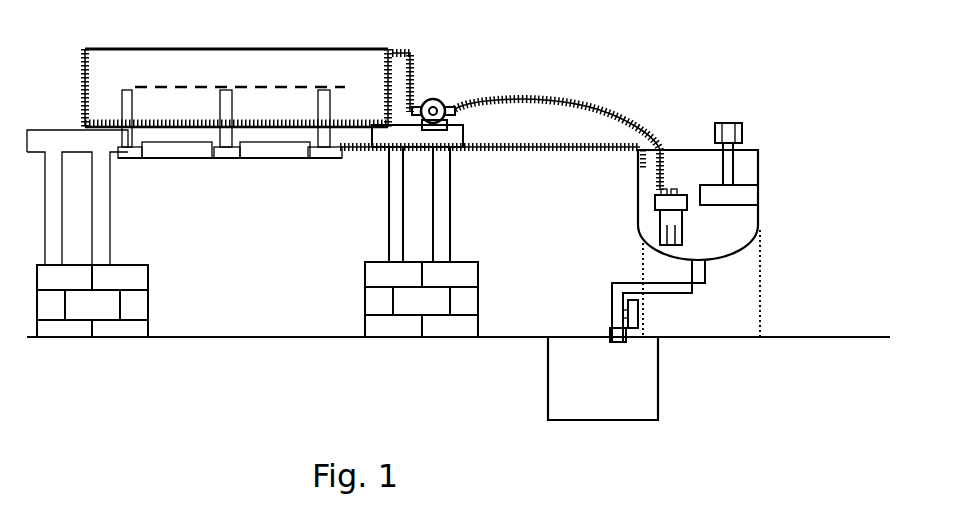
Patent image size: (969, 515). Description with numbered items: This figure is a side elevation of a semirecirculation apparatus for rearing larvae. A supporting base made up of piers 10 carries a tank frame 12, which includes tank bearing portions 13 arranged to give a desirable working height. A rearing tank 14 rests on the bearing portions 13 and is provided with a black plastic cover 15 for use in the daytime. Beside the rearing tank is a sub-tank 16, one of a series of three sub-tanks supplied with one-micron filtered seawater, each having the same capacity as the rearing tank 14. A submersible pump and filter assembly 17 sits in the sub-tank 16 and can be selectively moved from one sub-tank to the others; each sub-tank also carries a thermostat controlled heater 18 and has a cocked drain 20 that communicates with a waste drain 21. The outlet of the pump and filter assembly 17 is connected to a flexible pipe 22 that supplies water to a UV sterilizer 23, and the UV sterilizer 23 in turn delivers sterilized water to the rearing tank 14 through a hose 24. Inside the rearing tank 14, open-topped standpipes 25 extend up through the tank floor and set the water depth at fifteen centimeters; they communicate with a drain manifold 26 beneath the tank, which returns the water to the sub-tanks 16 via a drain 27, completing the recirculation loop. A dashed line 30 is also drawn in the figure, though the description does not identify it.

The piers 10 is at (395, 325).
The tank frame 12 is at (440, 217).
The tank bearing portions 13 is at (102, 142).
The rearing tank 14 is at (84, 86).
The black plastic cover 15 is at (256, 49).
The sub-tank 16 is at (760, 213).
The submersible pump and filter assembly 17 is at (655, 208).
The thermostat controlled heater 18 is at (742, 123).
The cocked drain 20 is at (673, 290).
The waste drain 21 is at (618, 410).
The flexible pipe 22 is at (543, 100).
The UV sterilizer 23 is at (428, 97).
The hose 24 is at (417, 57).
The open-topped standpipes 25 is at (232, 100).
The drain manifold 26 is at (267, 152).
The drain 27 is at (517, 150).
The dashed line level 30 is at (181, 86).